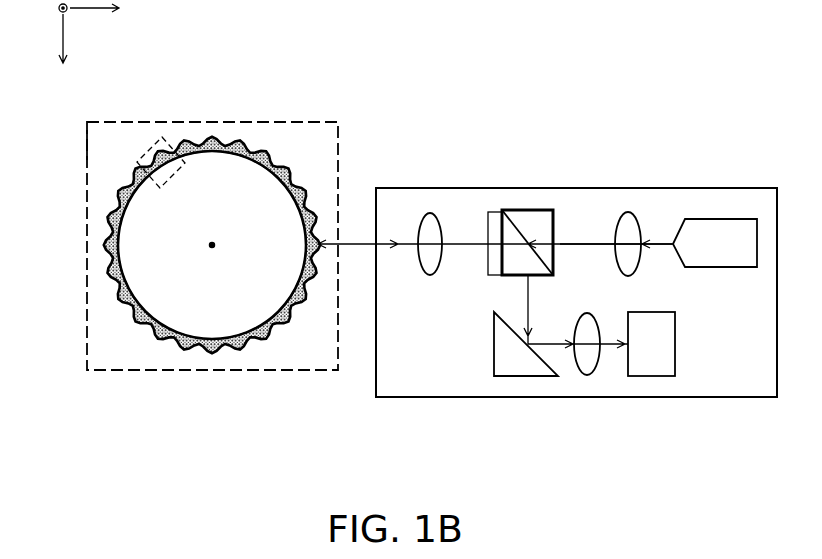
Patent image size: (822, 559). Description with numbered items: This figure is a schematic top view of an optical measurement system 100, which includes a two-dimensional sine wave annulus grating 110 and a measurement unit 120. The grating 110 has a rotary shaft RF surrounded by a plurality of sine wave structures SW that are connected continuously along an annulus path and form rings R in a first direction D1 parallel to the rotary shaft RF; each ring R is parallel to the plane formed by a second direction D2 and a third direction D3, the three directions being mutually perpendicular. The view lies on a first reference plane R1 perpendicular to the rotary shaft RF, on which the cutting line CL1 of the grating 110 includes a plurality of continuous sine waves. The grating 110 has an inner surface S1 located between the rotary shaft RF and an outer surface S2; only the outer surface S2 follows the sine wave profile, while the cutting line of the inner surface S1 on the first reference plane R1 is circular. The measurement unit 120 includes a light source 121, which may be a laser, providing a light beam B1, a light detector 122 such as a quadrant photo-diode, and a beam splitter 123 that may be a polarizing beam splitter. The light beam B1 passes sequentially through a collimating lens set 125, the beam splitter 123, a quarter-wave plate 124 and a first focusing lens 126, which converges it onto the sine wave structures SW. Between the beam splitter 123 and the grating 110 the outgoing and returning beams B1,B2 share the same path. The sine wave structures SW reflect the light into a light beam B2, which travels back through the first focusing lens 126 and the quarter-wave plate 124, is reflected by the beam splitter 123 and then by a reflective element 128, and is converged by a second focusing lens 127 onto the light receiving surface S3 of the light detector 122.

The optical measurement system 100 is at (795, 503).
The two-dimensional sine wave annulus grating 110 is at (115, 396).
The measurement unit 120 is at (748, 188).
The light source 121 is at (713, 219).
The light detector 122 is at (668, 352).
The beam splitter 123 is at (533, 210).
The quarter-wave plate 124 is at (495, 225).
The collimating lens set 125 is at (628, 212).
The first focusing lens 126 is at (430, 212).
The second focusing lens 127 is at (587, 376).
The reflective element 128 is at (520, 377).
The light beam B1 is at (589, 243).
The light beam B2 is at (529, 314).
The light beams B1,B2 is at (364, 243).
The inner surface S1 is at (126, 236).
The outer surface S2 is at (101, 232).
The light receiving surface S3 is at (618, 362).
The sine wave structures SW is at (138, 160).
The cutting line CL1 is at (115, 296).
The rotary shaft RF is at (211, 263).
The rings R is at (197, 135).
The first reference plane R1 is at (87, 143).
The first direction D1 is at (41, 4).
The second direction D2 is at (63, 58).
The third direction D3 is at (104, 11).